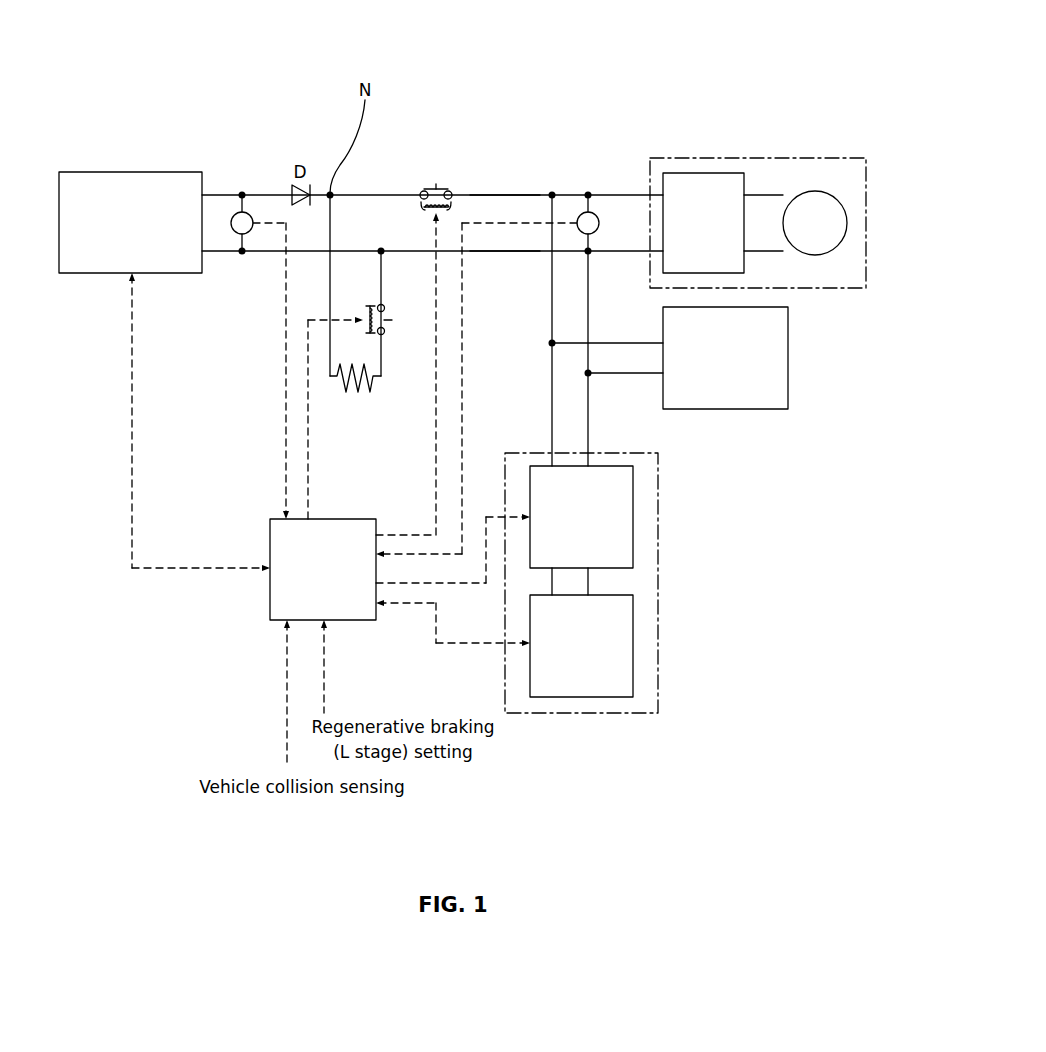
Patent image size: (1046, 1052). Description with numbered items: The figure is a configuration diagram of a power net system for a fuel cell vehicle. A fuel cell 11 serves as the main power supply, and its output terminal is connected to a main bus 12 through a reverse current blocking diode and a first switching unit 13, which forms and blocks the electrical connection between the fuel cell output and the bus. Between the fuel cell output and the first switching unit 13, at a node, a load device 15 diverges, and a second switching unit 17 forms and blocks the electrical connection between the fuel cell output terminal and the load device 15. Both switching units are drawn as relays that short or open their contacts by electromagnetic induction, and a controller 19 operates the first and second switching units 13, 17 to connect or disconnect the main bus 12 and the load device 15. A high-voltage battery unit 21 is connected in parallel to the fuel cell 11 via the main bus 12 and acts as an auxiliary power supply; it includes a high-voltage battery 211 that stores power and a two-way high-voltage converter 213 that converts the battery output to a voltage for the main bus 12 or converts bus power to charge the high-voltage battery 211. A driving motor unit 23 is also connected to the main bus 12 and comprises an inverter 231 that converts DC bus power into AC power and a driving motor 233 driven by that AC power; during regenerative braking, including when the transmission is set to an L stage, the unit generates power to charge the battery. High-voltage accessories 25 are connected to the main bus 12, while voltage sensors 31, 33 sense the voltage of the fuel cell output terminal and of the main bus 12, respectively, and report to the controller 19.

The fuel cell 11 is at (130, 172).
The main bus 12 is at (497, 251).
The first switching unit 13 is at (438, 187).
The load device 15 is at (366, 386).
The second switching unit 17 is at (385, 308).
The controller 19 is at (270, 600).
The high-voltage battery unit 21 is at (646, 646).
The high-voltage battery 211 is at (633, 650).
The two-way high-voltage converter 213 is at (633, 517).
The driving motor unit 23 is at (758, 194).
The inverter 231 is at (706, 173).
The driving motor 233 is at (815, 191).
The high-voltage accessories 25 is at (724, 409).
The voltage sensor 31 is at (250, 213).
The voltage sensor 33 is at (594, 212).